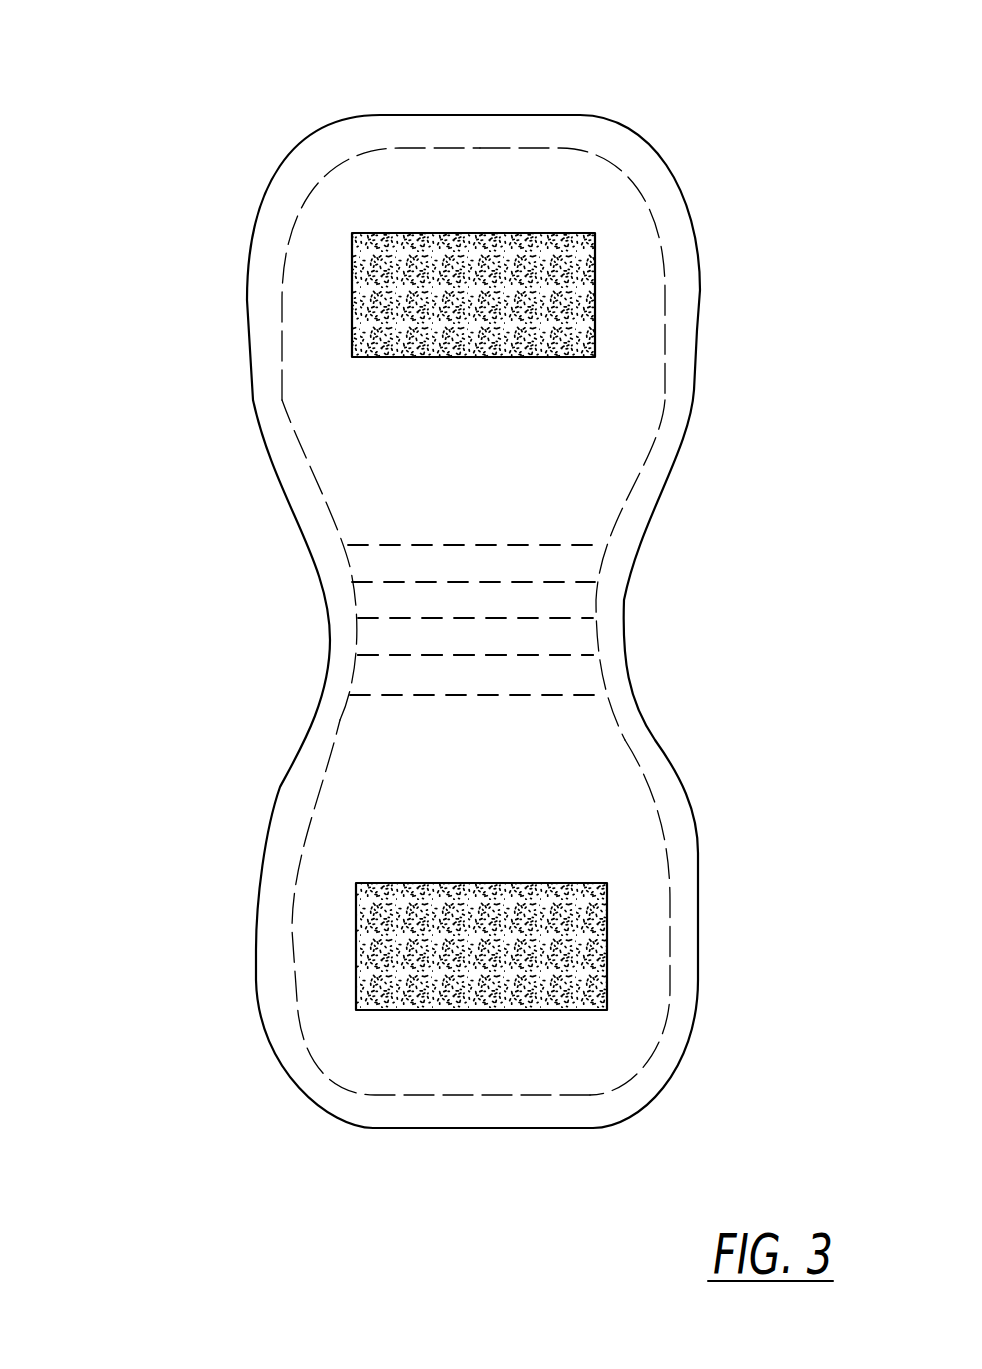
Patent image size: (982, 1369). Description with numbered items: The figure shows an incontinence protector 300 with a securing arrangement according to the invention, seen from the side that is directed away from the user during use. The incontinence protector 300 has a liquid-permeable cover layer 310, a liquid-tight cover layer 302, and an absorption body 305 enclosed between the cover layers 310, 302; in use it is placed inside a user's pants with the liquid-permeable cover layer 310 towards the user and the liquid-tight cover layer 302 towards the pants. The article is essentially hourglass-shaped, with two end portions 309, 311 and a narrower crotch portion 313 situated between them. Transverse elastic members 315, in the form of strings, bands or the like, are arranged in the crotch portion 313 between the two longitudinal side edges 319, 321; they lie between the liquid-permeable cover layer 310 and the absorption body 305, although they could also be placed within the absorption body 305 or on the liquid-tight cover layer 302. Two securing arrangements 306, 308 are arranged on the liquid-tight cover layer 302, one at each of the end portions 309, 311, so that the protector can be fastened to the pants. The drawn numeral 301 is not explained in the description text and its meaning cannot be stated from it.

The incontinence protector 300 is at (655, 91).
The absorbent core 301 is at (350, 837).
The liquid-tight cover layer 302 is at (625, 408).
The absorption body 305 is at (299, 413).
The securing arrangement 306 is at (523, 245).
The securing arrangement 308 is at (550, 995).
The end portion 309 is at (642, 305).
The liquid-permeable cover layer 310 is at (299, 321).
The end portion 311 is at (643, 975).
The crotch portion 313 is at (570, 637).
The elastic members 315 is at (397, 655).
The longitudinal side edge 319 is at (253, 953).
The longitudinal side edge 321 is at (694, 813).